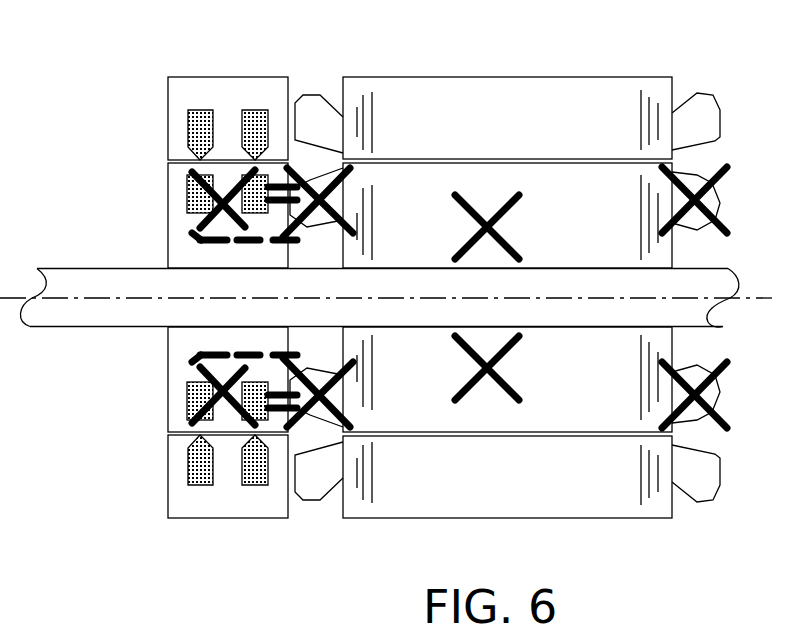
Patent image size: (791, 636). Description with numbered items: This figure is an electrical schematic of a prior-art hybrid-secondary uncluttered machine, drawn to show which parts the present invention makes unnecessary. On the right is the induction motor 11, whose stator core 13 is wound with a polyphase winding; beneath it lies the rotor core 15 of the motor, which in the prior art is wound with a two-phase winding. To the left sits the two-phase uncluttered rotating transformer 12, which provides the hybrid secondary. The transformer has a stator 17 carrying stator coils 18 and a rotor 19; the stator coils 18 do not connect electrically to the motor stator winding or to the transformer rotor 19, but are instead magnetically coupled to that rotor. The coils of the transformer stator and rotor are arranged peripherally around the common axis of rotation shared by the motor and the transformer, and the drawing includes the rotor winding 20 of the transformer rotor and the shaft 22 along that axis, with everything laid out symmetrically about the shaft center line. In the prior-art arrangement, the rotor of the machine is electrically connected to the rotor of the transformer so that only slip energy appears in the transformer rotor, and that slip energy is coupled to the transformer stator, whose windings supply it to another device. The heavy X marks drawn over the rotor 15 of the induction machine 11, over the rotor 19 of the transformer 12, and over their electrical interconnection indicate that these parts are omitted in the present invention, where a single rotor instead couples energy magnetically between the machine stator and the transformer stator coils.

The induction motor 11 is at (505, 137).
The uncluttered transformer 12 is at (188, 139).
The stator core 13 is at (542, 142).
The rotor core 15 is at (595, 223).
The stator 17 is at (170, 123).
The stator coils 18 is at (187, 140).
The rotor 19 is at (168, 242).
The rotor winding 20 is at (187, 193).
The shaft 22 is at (93, 268).